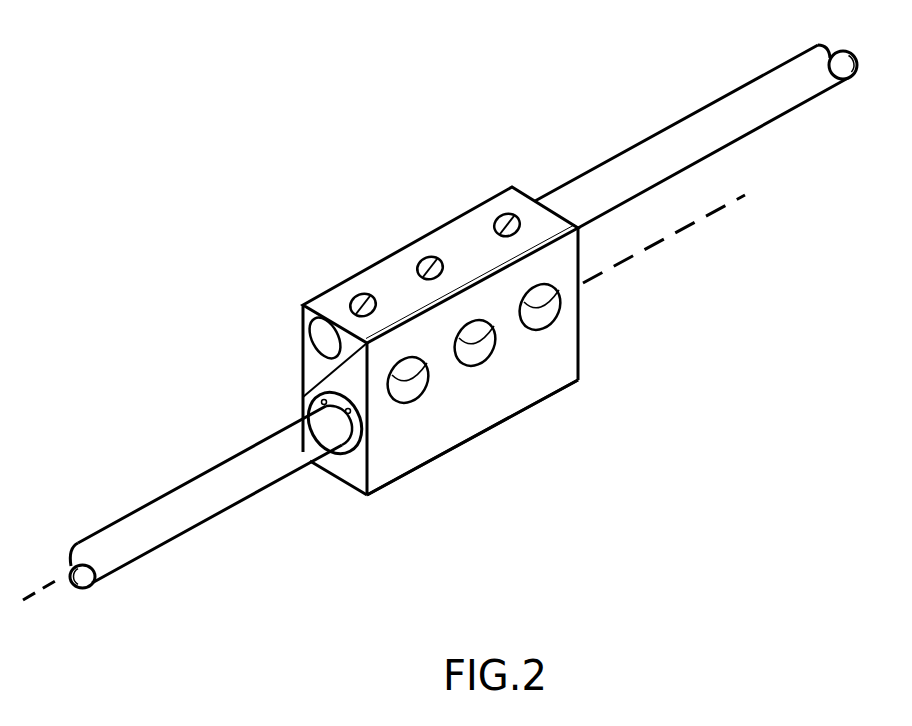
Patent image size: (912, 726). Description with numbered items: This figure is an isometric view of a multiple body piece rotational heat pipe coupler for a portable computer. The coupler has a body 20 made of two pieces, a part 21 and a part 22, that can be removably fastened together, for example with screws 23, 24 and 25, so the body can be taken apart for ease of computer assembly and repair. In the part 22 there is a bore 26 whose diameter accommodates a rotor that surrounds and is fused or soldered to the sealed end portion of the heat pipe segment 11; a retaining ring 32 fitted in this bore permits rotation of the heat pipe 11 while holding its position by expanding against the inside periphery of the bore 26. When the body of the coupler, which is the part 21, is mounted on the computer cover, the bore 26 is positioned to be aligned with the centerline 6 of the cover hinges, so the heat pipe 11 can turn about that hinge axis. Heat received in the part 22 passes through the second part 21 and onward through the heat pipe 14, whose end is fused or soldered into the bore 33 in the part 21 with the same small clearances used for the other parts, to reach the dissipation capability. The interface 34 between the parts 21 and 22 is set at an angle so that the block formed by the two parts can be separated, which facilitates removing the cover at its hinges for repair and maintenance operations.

The centerline 6 is at (667, 242).
The heat pipe segment 11 is at (160, 510).
The heat pipe 14 is at (699, 120).
The body 20 is at (378, 243).
The part 21 is at (508, 200).
The part 22 is at (525, 385).
The screw 23 is at (412, 370).
The screw 24 is at (469, 337).
The screw 25 is at (540, 298).
The bore 26 is at (303, 413).
The retaining ring 32 is at (353, 442).
The bore 33 is at (308, 329).
The interface 34 is at (330, 377).